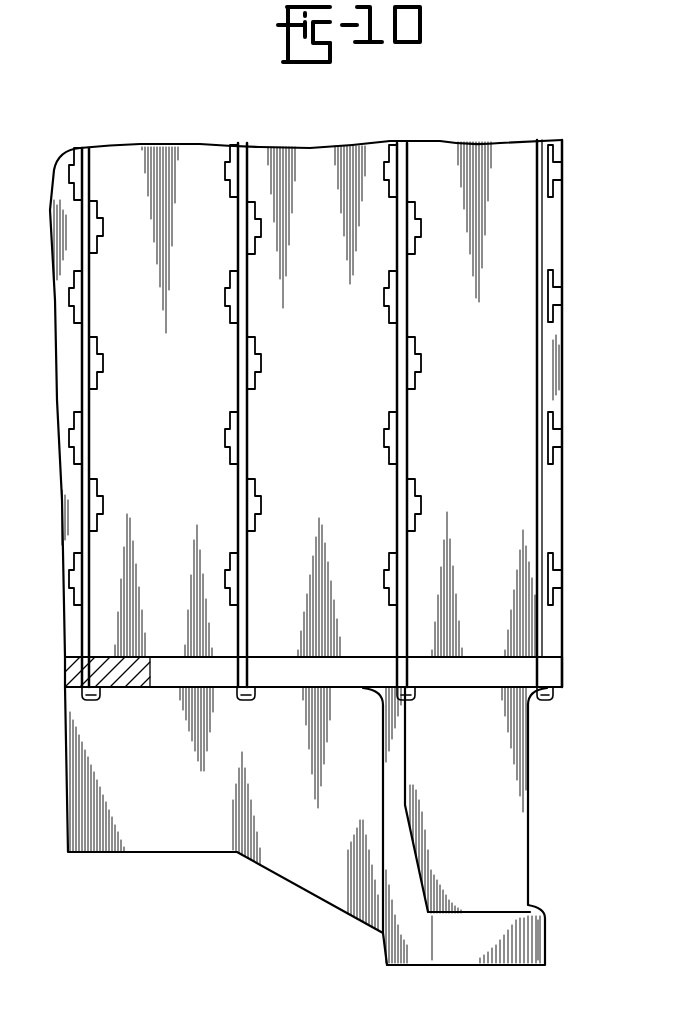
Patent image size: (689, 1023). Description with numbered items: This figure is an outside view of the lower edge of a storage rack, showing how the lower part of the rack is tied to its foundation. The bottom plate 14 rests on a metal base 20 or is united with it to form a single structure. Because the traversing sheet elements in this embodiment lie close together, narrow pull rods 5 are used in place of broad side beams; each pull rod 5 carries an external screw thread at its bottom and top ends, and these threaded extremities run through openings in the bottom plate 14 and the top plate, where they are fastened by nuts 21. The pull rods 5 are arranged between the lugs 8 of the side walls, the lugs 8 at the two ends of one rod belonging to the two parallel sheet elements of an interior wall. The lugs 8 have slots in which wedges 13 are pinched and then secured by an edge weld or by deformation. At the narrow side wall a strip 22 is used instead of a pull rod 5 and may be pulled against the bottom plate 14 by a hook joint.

The pull rod 5 is at (246, 148).
The lug 8 is at (93, 335).
The wedge 13 is at (97, 230).
The bottom plate 14 is at (124, 688).
The metal base 20 is at (468, 945).
The nut 21 is at (250, 692).
The strip 22 is at (556, 363).